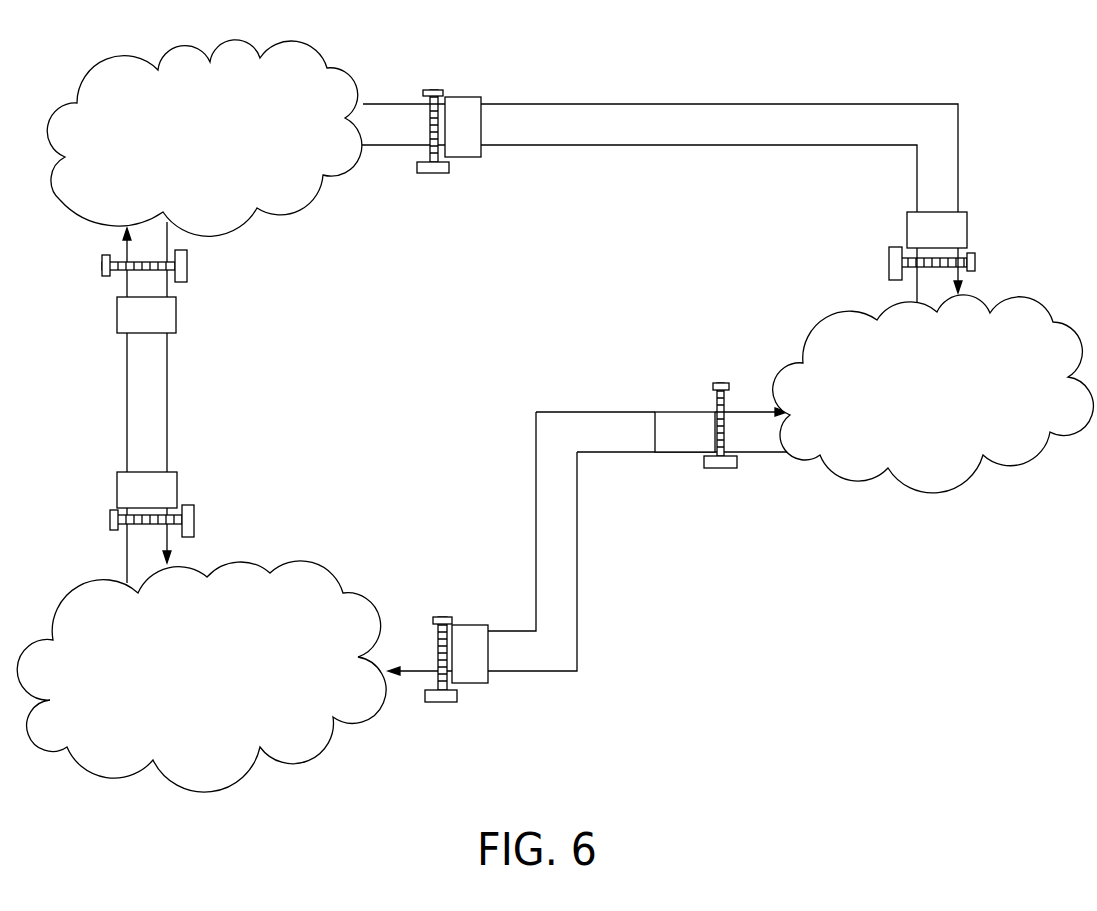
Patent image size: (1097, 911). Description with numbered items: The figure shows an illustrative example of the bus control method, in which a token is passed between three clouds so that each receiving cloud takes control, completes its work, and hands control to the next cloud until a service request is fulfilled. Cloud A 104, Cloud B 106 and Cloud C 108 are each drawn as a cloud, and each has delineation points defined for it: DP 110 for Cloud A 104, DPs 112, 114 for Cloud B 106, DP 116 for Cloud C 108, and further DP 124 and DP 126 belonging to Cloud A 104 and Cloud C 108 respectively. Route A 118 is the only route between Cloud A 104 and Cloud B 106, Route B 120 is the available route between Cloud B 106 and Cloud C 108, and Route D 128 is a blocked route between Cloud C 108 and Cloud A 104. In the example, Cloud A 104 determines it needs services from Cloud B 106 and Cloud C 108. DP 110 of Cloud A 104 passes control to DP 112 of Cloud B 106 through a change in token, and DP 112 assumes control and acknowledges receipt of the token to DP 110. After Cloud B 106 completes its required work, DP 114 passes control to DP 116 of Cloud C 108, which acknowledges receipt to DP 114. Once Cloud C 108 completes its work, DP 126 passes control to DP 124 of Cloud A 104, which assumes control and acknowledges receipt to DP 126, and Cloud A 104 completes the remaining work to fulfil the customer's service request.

The Cloud A 104 is at (107, 58).
The Cloud B 106 is at (1060, 318).
The Cloud C 108 is at (300, 560).
The delineation point (DP) 110 is at (476, 97).
The delineation point (DP) 112 is at (967, 232).
The delineation point (DP) 114 is at (663, 412).
The delineation point (DP) 116 is at (474, 625).
The Route A 118 is at (861, 105).
The Route B 120 is at (536, 527).
The delineation point (DP) 124 is at (117, 316).
The delineation point (DP) 126 is at (117, 494).
The Route D 128 is at (160, 405).